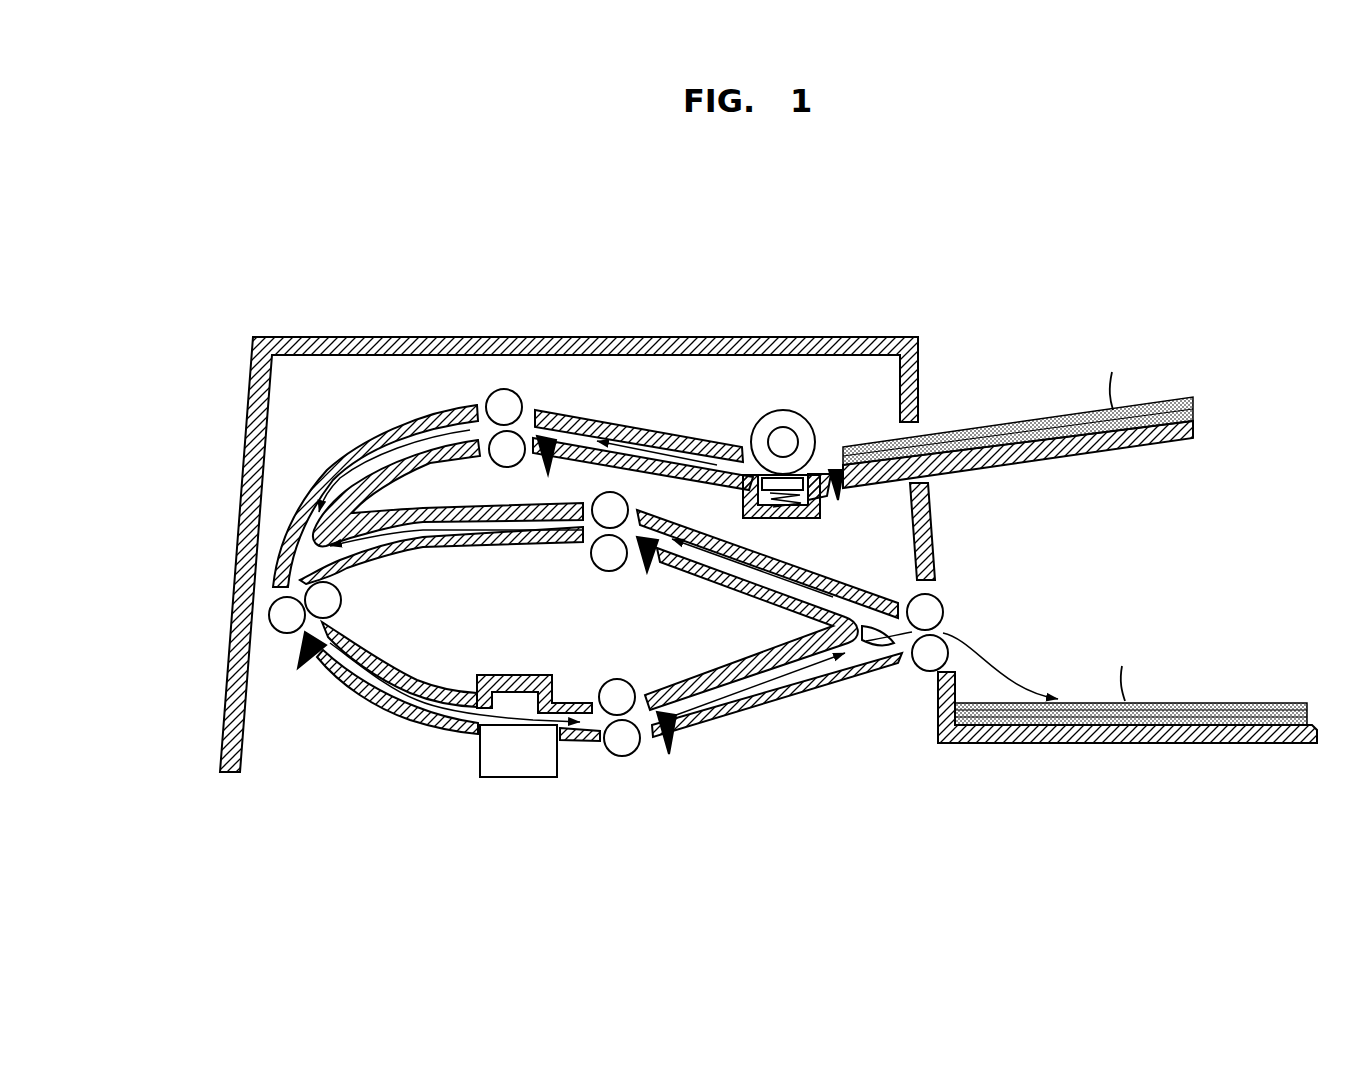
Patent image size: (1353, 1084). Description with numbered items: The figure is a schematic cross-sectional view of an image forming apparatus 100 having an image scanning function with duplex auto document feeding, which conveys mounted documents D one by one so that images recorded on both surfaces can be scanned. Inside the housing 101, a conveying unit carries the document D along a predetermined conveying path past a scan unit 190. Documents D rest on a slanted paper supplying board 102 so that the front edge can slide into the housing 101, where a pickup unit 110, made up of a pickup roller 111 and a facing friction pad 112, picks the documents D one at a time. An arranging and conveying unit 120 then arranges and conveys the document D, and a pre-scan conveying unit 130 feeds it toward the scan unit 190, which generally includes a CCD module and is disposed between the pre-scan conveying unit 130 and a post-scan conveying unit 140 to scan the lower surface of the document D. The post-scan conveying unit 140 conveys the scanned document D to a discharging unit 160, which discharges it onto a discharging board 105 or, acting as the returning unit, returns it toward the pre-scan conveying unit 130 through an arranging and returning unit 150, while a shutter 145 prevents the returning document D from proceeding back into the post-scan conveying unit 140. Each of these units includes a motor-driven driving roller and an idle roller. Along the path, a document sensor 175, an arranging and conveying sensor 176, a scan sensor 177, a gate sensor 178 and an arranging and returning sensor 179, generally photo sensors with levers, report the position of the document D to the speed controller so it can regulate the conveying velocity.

The image forming apparatus 100 is at (197, 295).
The housing 101 is at (886, 336).
The paper supplying board 102 is at (1103, 440).
The discharging board 105 is at (1100, 744).
The pickup unit 110 is at (828, 419).
The pickup roller 111 is at (782, 409).
The friction pad 112 is at (808, 500).
The arranging and conveying unit 120 is at (516, 378).
The pre-scan conveying unit 130 is at (350, 600).
The post-scan conveying unit 140 is at (602, 680).
The shutter 145 is at (868, 650).
The arranging and returning unit 150 is at (629, 580).
The discharging unit 160 is at (967, 597).
The document sensor 175 is at (845, 488).
The arranging and conveying sensor 176 is at (552, 436).
The scan sensor 177 is at (313, 662).
The gate sensor 178 is at (672, 755).
The arranging and returning sensor 179 is at (660, 578).
The scan unit 190 is at (494, 800).
The document D is at (1075, 531).